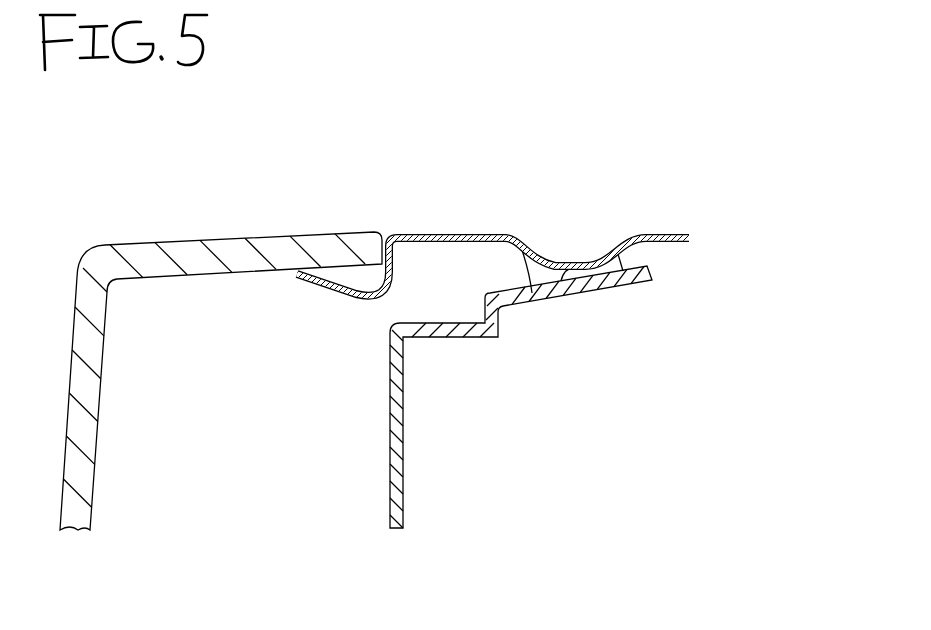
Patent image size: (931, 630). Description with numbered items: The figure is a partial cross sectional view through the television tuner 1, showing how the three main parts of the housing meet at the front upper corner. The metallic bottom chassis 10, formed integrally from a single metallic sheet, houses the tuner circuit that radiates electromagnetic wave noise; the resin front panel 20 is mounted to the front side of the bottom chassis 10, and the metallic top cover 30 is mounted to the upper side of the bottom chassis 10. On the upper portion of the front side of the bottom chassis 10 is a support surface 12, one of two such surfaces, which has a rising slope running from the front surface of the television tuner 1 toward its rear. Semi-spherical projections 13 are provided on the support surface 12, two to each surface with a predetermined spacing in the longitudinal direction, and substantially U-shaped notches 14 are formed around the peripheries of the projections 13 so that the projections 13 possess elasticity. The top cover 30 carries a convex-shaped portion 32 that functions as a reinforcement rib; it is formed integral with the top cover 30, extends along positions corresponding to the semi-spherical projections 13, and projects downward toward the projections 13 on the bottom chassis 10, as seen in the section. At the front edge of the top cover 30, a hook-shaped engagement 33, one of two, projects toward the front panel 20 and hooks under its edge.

The television tuner 1 is at (351, 118).
The bottom chassis 10 is at (389, 454).
The support surface 12 is at (514, 292).
The projection 13 is at (602, 260).
The notch 14 is at (522, 250).
The front panel 20 is at (170, 242).
The top cover 30 is at (675, 233).
The convex-shaped portion 32 is at (577, 263).
The hook-shaped engagement 33 is at (338, 287).